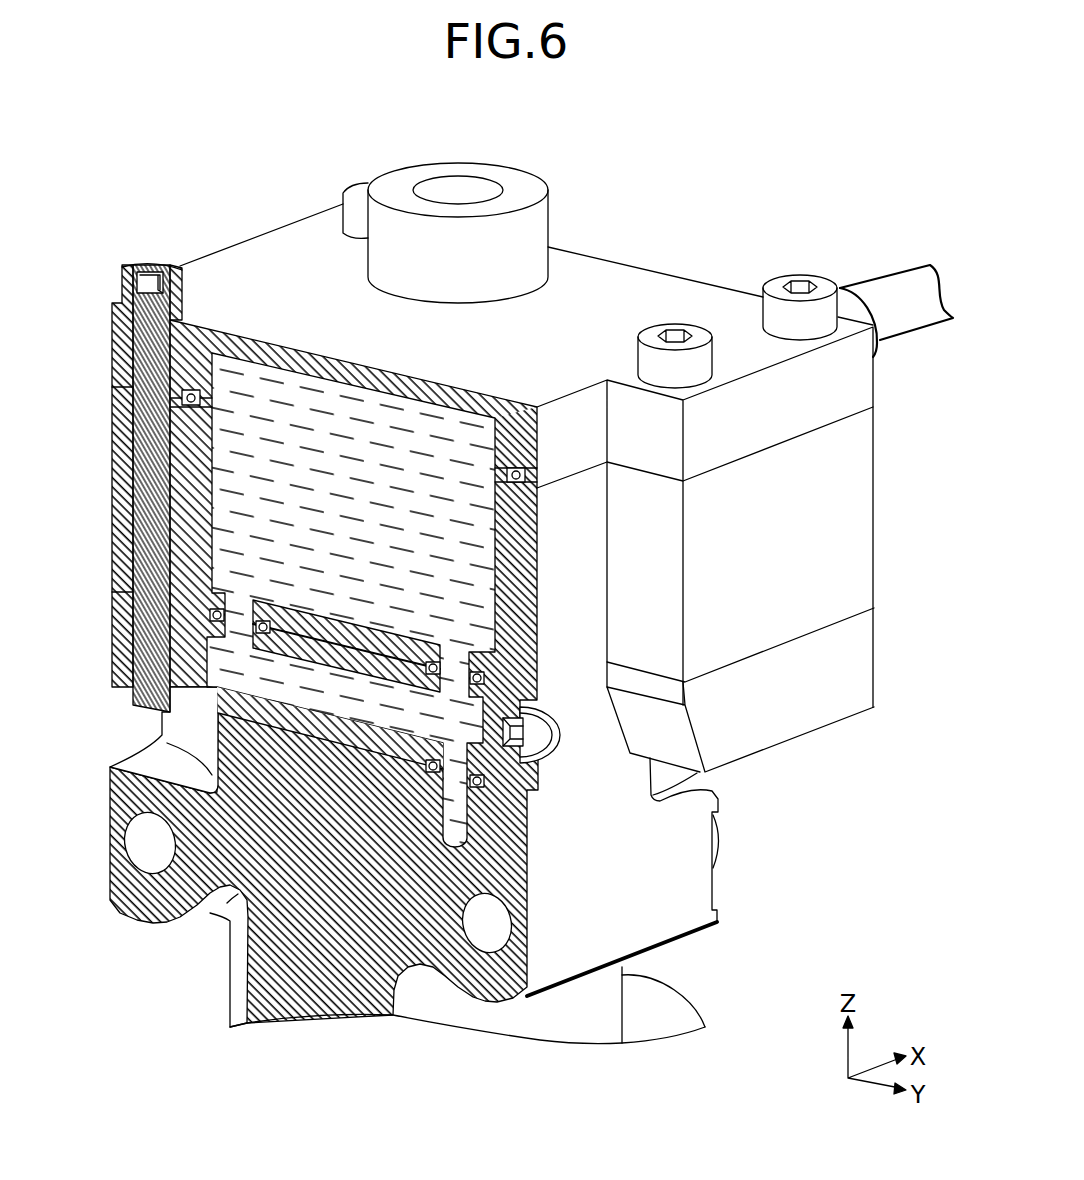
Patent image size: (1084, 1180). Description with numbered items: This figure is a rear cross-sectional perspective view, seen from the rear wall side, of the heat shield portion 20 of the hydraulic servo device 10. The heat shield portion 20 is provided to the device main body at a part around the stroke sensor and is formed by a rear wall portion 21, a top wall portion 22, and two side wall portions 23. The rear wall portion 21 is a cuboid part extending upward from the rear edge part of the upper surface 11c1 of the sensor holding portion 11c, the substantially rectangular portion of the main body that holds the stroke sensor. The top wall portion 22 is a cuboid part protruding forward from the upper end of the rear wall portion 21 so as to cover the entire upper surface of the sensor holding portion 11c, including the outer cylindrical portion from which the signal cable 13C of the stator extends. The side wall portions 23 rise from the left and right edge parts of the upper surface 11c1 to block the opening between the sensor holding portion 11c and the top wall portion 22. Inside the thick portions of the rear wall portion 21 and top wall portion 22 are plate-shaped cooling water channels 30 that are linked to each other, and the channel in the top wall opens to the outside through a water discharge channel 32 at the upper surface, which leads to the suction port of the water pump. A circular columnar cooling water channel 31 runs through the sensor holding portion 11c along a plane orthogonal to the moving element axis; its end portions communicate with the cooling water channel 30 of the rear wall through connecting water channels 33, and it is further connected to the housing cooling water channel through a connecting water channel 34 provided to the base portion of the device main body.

The hydraulic servo device 10 is at (802, 836).
The sensor holding portion 11c is at (825, 705).
The upper surface of the sensor holding portion 11c1 is at (838, 612).
The signal cable 13C is at (893, 295).
The heat shield portion 20 is at (178, 230).
The rear wall portion 21 is at (188, 468).
The top wall portion 22 is at (240, 262).
The side wall portion 23 is at (850, 520).
The cooling water channel 30 is at (326, 388).
The cooling water channel 31 is at (300, 702).
The water discharge channel 32 is at (462, 192).
The connecting water channel 33 is at (220, 622).
The connecting water channel 34 is at (465, 787).